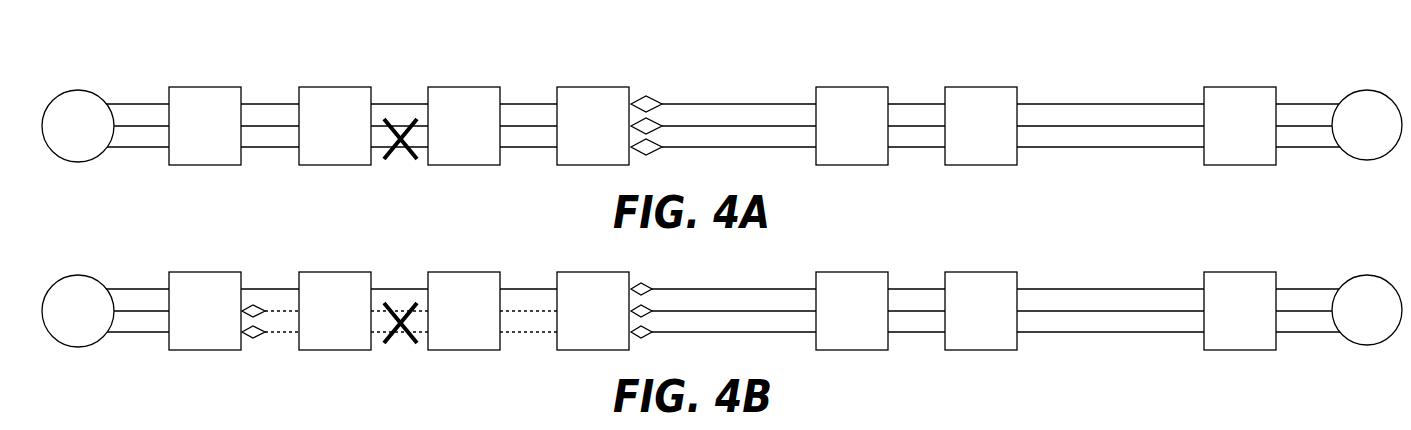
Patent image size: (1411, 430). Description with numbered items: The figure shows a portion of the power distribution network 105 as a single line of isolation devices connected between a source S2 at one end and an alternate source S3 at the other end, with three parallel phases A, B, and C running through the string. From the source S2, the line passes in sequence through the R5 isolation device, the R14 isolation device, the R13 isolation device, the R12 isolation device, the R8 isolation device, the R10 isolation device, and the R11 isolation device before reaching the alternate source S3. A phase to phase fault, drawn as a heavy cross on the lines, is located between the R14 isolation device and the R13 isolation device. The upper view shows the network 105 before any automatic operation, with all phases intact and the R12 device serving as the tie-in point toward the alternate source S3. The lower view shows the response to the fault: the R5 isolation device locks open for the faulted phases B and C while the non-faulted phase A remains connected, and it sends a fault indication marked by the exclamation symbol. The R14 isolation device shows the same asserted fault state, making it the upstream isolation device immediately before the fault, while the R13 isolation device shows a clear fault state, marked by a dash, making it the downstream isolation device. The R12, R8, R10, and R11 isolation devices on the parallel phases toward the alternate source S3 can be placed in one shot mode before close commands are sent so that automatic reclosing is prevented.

In FIG. 4A, the power distribution network 105 is at (79, 72).
In FIG. 4B, the power distribution network 105 is at (79, 257).
In FIG. 4A, the source S2 is at (78, 126).
In FIG. 4B, the source S2 is at (78, 311).
In FIG. 4A, the alternate source S3 is at (1367, 125).
In FIG. 4B, the alternate source S3 is at (1367, 310).
In FIG. 4A, the phase A is at (722, 94).
In FIG. 4B, the phase A is at (722, 279).
In FIG. 4A, the phase B is at (723, 116).
In FIG. 4B, the phase B is at (723, 301).
In FIG. 4A, the phase C is at (723, 138).
In FIG. 4B, the phase C is at (723, 323).
In FIG. 4A, the R5 isolation device R5 is at (205, 126).
In FIG. 4B, the R5 isolation device R5 is at (205, 311).
In FIG. 4A, the R14 isolation device R14 is at (335, 126).
In FIG. 4B, the R14 isolation device R14 is at (335, 311).
In FIG. 4A, the R13 isolation device R13 is at (464, 126).
In FIG. 4B, the R13 isolation device R13 is at (464, 311).
In FIG. 4A, the R12 isolation device R12 is at (593, 126).
In FIG. 4B, the R12 isolation device R12 is at (593, 311).
In FIG. 4A, the R8 isolation device R8 is at (852, 126).
In FIG. 4B, the R8 isolation device R8 is at (852, 311).
In FIG. 4A, the R10 isolation device R10 is at (981, 126).
In FIG. 4B, the R10 isolation device R10 is at (981, 311).
In FIG. 4A, the R11 isolation device R11 is at (1240, 126).
In FIG. 4B, the R11 isolation device R11 is at (1240, 311).